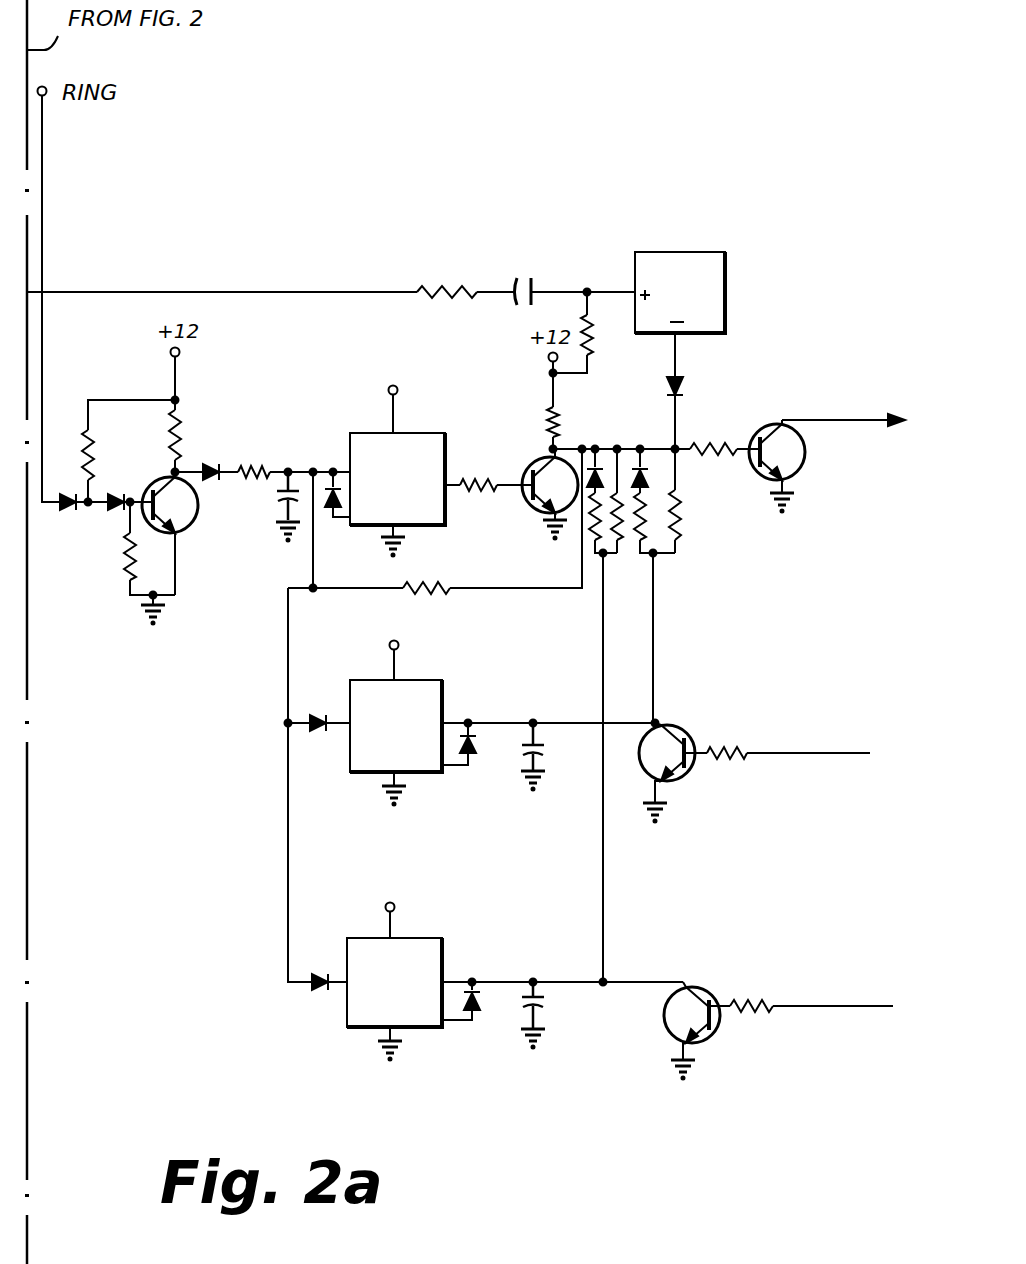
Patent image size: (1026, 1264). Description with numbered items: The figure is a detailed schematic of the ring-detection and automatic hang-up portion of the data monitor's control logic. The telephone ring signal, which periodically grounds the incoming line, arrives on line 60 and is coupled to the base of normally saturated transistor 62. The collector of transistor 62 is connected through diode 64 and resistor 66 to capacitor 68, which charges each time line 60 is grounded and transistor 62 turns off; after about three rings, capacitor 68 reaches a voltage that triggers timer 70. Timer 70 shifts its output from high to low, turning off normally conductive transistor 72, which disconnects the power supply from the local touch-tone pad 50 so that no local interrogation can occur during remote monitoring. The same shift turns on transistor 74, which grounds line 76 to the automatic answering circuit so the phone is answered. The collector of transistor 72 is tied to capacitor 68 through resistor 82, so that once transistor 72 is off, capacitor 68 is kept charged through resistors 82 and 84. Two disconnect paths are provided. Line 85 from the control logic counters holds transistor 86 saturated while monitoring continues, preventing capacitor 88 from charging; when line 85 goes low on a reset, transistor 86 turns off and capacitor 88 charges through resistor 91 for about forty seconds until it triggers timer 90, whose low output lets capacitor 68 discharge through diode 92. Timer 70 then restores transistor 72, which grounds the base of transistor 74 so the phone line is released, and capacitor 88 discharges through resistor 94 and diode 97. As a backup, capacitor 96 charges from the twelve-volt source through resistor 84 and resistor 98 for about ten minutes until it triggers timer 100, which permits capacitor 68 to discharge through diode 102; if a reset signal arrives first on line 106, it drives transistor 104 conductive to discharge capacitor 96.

The local touch-tone pad 50 is at (724, 253).
The line 60 is at (44, 206).
The transistor 62 is at (185, 520).
The diode 64 is at (206, 460).
The resistor 66 is at (256, 470).
The capacitor 68 is at (281, 498).
The timer 70 is at (434, 431).
The transistor 72 is at (530, 502).
The transistor 74 is at (800, 462).
The line 76 is at (840, 425).
The resistor 82 is at (452, 591).
The resistor 84 is at (560, 405).
The line 85 is at (813, 755).
The transistor 86 is at (680, 725).
The capacitor 88 is at (577, 760).
The timer 90 is at (434, 710).
The resistor 91 is at (680, 512).
The diode 92 is at (315, 733).
The resistor 94 is at (644, 527).
The capacitor 96 is at (552, 1005).
The diode 97 is at (648, 478).
The resistor 98 is at (622, 528).
The timer 100 is at (364, 948).
The diode 102 is at (322, 992).
The transistor 104 is at (712, 968).
The line 106 is at (845, 990).